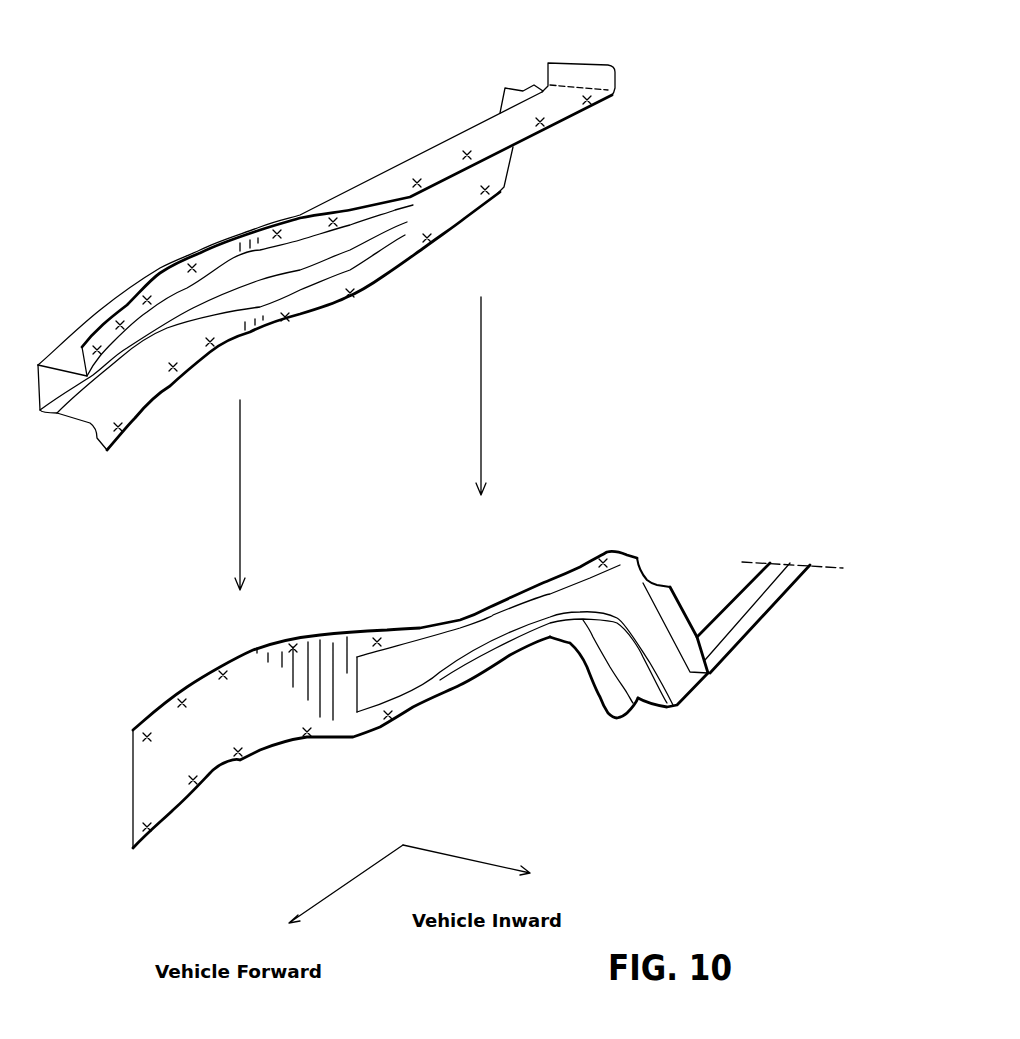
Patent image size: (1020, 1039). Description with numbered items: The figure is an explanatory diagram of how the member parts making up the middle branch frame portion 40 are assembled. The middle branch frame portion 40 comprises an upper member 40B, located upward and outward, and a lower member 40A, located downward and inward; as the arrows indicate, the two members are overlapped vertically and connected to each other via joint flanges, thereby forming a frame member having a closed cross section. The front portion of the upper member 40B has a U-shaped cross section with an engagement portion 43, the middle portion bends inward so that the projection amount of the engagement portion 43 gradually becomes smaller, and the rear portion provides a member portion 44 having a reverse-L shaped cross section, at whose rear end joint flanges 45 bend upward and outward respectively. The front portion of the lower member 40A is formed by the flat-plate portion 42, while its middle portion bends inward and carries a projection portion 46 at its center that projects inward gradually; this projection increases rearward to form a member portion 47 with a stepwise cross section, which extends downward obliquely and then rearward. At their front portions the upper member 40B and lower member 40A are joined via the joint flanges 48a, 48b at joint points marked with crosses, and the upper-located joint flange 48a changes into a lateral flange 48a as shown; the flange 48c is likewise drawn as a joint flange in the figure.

The middle branch frame portion 40 is at (658, 212).
The lower member 40A is at (638, 545).
The upper member 40B is at (554, 136).
The flat-plate portion 42 is at (195, 735).
The engagement portion 43 is at (65, 353).
The member portion 44 is at (447, 197).
The joint flange 45 is at (503, 106).
The projection portion 46 is at (453, 687).
The member portion 47 is at (642, 687).
The joint flange 48a is at (130, 318).
The joint flange 48b is at (152, 390).
The end joint flange 48c is at (437, 172).